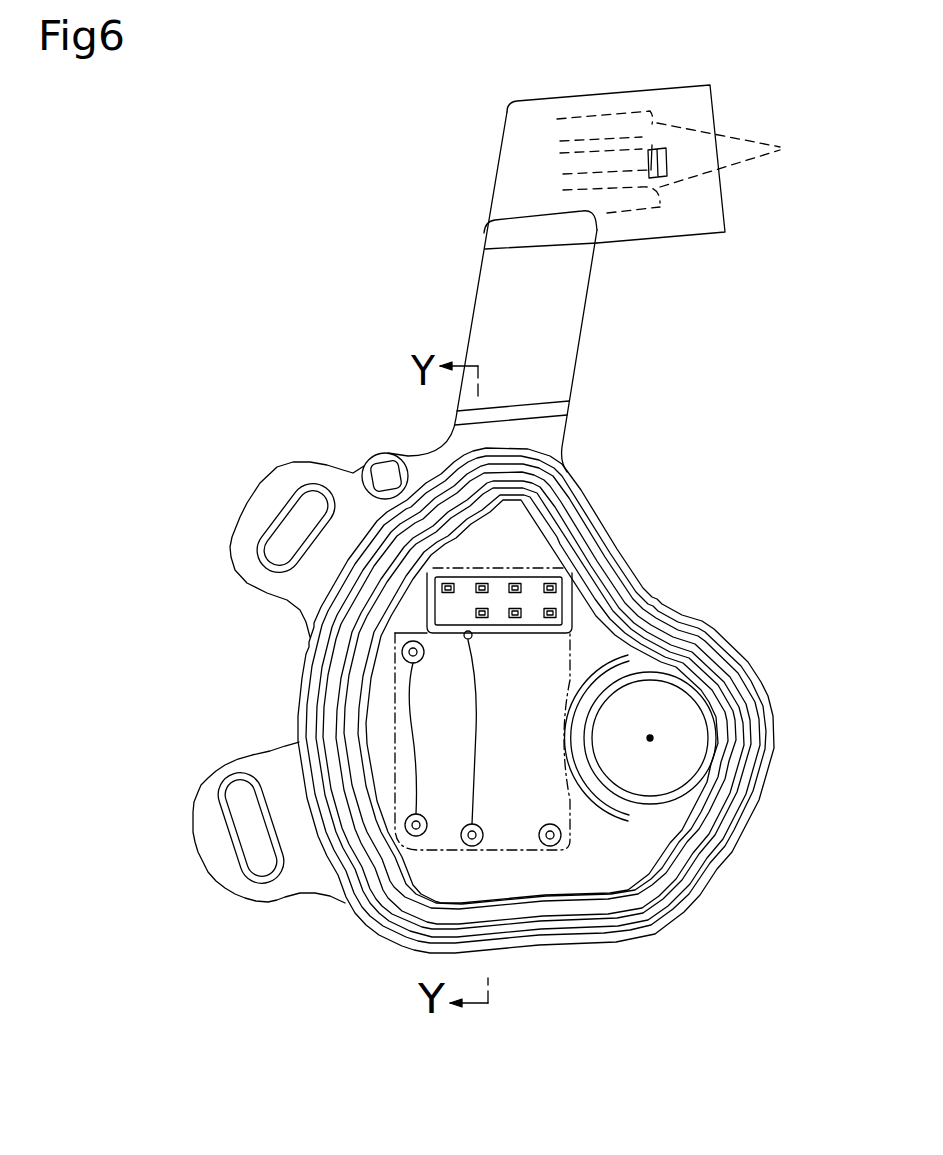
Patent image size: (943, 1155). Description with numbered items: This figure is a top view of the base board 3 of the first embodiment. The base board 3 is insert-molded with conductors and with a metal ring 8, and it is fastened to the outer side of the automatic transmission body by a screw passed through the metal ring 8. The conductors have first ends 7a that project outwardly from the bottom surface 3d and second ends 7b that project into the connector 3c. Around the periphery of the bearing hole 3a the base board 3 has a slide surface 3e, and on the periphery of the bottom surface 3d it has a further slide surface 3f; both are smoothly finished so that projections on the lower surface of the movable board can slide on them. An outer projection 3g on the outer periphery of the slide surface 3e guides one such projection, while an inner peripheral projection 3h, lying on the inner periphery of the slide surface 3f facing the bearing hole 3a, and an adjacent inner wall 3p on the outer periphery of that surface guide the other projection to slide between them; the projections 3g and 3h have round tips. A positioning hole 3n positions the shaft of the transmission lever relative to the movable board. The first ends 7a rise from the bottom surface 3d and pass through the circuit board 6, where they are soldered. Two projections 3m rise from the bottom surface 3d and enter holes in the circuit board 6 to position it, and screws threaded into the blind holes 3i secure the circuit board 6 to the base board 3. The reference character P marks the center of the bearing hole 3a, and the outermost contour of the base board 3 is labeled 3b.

The base board 3 is at (566, 440).
The bearing hole 3a is at (696, 732).
The outer flange ring 3b is at (310, 667).
The connector 3c is at (716, 103).
The bottom surface 3d is at (597, 627).
The slide surface 3e is at (630, 807).
The slide surface 3f is at (383, 862).
The outer projection 3g is at (687, 620).
The inner peripheral projection 3h is at (375, 717).
The blind holes 3i is at (480, 700).
The projections 3m is at (481, 743).
The positioning hole 3n is at (383, 470).
The inner wall 3p is at (355, 692).
The circuit board 6 is at (572, 820).
The first ends of the conductors 7a is at (483, 582).
The second ends of the conductors 7b is at (693, 162).
The metal ring 8 is at (276, 534).
The center point of boss P is at (652, 740).